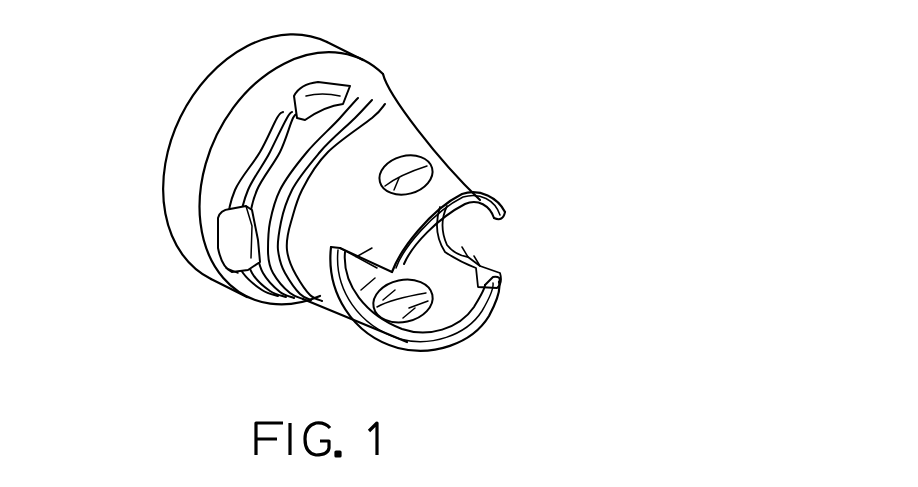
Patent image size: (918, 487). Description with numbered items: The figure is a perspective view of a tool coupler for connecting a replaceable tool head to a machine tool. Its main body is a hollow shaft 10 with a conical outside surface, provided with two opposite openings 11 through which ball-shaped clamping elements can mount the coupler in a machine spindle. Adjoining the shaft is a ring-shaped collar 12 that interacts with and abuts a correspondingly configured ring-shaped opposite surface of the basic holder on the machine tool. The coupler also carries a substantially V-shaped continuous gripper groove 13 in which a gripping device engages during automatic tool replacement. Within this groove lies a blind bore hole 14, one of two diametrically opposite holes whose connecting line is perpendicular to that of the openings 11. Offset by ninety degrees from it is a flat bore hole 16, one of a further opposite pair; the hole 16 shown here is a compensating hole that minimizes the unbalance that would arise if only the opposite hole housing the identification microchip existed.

The hollow shaft 10 is at (337, 228).
The openings 11 is at (407, 168).
The ring-shaped collar 12 is at (296, 300).
The gripper groove 13 is at (268, 159).
The blind bore hole 14 is at (235, 225).
The flat bore hole 16 is at (307, 97).